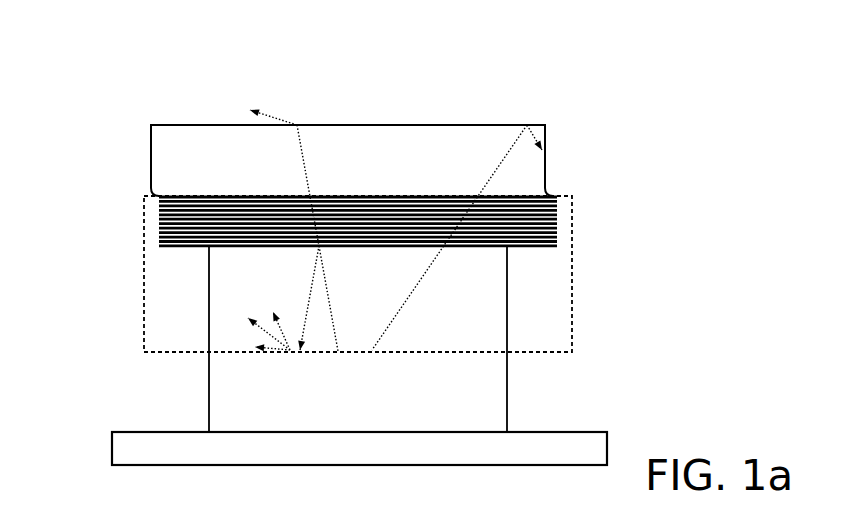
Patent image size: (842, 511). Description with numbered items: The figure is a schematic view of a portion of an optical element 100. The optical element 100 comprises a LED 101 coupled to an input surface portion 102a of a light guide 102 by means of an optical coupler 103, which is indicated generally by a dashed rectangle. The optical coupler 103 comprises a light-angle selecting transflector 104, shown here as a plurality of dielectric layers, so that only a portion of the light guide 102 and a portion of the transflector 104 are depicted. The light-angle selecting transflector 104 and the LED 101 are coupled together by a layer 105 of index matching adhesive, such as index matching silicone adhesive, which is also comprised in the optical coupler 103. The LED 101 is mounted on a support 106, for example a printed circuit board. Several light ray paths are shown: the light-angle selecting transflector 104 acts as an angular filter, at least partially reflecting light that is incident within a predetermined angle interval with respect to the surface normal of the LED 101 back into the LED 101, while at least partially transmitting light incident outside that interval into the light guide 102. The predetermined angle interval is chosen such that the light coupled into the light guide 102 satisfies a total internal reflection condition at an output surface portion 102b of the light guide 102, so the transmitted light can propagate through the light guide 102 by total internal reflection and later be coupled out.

The optical element 100 is at (96, 73).
The LED 101 is at (507, 383).
The light guide 102 is at (151, 155).
The input surface portion 102a is at (513, 193).
The output surface portion 102b is at (433, 125).
The optical coupler 103 is at (572, 246).
The light-angle selecting transflector 104 is at (183, 246).
The layer of index matching adhesive 105 is at (507, 308).
The support 106 is at (112, 443).